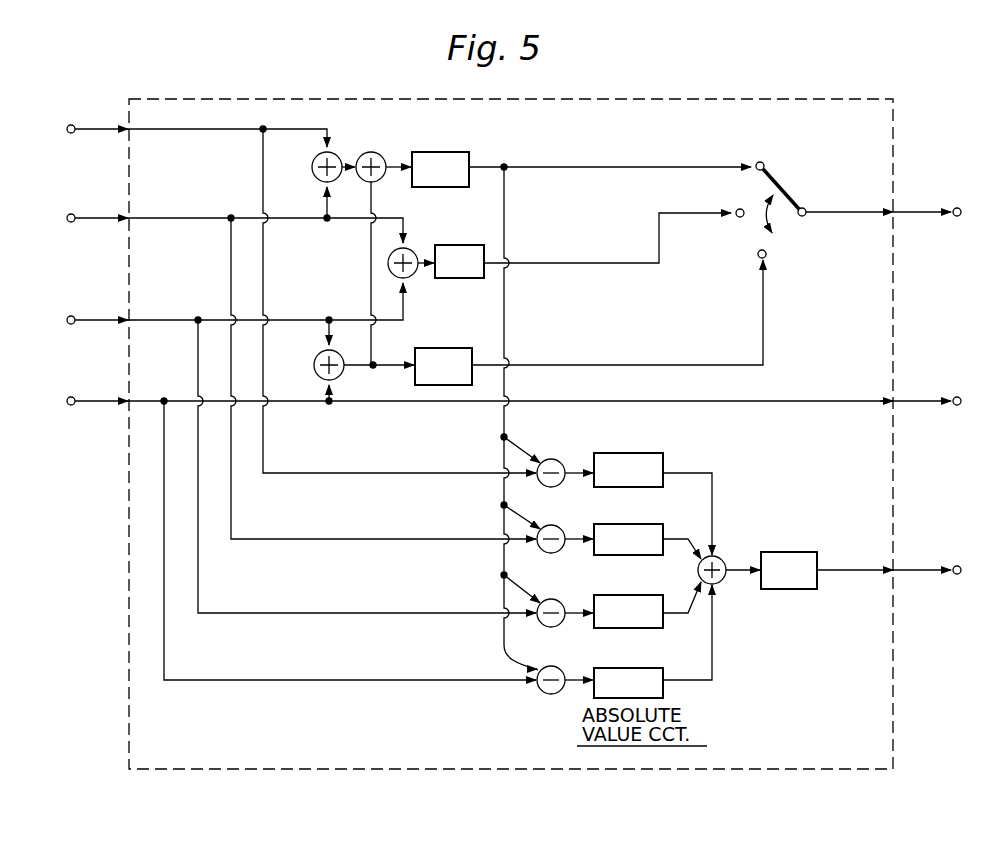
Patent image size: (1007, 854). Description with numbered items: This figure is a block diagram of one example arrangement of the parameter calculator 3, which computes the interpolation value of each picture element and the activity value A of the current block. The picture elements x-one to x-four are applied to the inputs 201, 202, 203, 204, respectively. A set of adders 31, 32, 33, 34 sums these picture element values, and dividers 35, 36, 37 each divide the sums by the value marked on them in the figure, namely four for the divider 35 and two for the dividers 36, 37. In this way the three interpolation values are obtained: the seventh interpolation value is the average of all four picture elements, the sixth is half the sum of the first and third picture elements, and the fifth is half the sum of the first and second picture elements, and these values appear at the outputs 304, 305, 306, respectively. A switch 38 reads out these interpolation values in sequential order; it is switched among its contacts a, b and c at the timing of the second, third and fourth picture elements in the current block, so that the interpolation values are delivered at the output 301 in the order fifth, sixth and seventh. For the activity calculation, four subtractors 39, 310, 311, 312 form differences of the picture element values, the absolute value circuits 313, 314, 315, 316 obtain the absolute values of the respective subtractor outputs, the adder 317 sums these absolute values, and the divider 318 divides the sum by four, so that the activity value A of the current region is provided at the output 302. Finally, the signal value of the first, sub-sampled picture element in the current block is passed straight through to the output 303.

The parameter calculator 3 is at (647, 102).
The input 201 is at (95, 130).
The input 202 is at (95, 220).
The input 203 is at (95, 322).
The input 204 is at (95, 402).
The adder 31 is at (339, 153).
The adder 32 is at (385, 153).
The adder 33 is at (416, 245).
The adder 34 is at (312, 366).
The divider 35 is at (453, 148).
The divider 36 is at (455, 282).
The divider 37 is at (412, 386).
The switch 38 is at (799, 183).
The subtractor 39 is at (549, 462).
The output 301 is at (910, 212).
The output 302 is at (917, 570).
The output 303 is at (919, 400).
The output 304 is at (669, 164).
The output 305 is at (695, 222).
The output 306 is at (680, 364).
The subtractor 310 is at (549, 530).
The subtractor 311 is at (549, 603).
The subtractor 312 is at (547, 668).
The absolute value circuit 313 is at (625, 455).
The absolute value circuit 314 is at (627, 527).
The absolute value circuit 315 is at (627, 596).
The absolute value circuit 316 is at (635, 668).
The adder 317 is at (725, 560).
The divider 318 is at (792, 552).